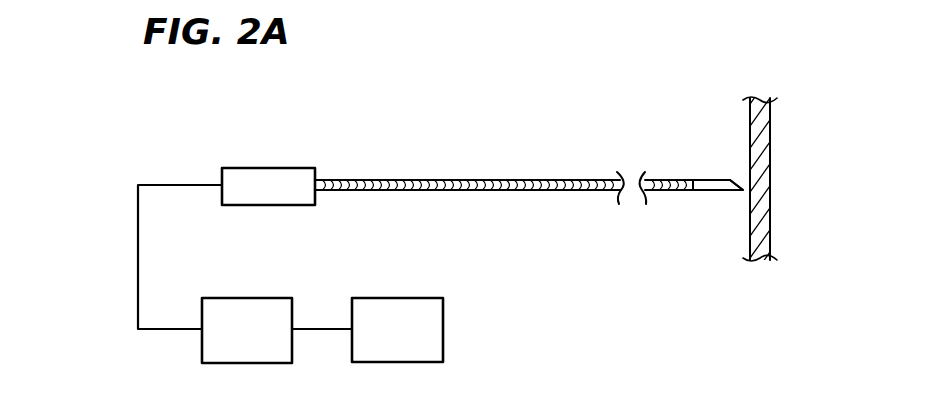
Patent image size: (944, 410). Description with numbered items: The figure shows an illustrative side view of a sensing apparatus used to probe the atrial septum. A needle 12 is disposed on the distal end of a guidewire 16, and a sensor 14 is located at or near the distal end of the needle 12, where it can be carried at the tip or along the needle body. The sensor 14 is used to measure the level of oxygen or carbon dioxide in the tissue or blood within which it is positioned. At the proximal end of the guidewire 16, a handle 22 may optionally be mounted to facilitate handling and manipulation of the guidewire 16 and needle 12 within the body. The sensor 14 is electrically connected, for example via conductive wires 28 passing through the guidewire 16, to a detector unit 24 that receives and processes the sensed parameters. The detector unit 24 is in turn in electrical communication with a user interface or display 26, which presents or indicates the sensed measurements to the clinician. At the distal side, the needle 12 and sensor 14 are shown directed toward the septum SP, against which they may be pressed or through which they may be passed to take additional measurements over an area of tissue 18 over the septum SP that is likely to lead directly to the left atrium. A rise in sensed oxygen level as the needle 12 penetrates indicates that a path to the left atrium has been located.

The needle 12 is at (704, 180).
The sensor 14 is at (738, 185).
The guidewire 16 is at (470, 180).
The area of tissue 18 is at (770, 195).
The handle 22 is at (265, 168).
The detector unit 24 is at (252, 298).
The user interface or display 26 is at (419, 298).
The conductive wires 28 is at (138, 275).
The septum SP is at (770, 123).